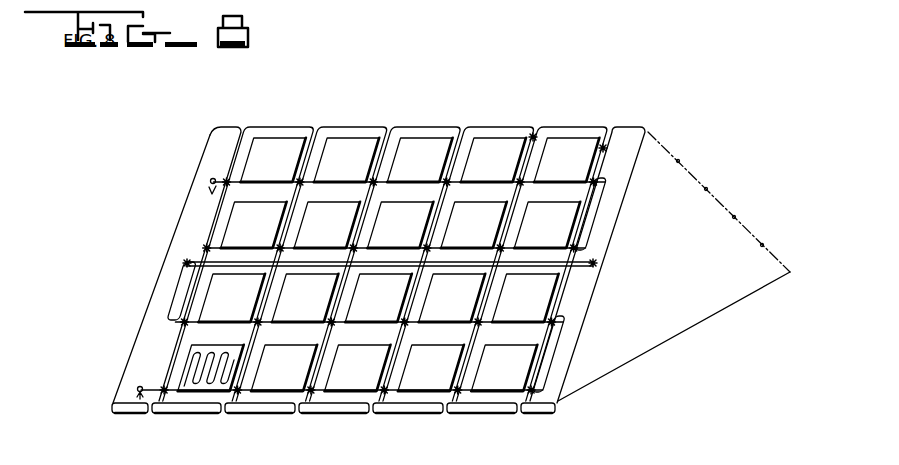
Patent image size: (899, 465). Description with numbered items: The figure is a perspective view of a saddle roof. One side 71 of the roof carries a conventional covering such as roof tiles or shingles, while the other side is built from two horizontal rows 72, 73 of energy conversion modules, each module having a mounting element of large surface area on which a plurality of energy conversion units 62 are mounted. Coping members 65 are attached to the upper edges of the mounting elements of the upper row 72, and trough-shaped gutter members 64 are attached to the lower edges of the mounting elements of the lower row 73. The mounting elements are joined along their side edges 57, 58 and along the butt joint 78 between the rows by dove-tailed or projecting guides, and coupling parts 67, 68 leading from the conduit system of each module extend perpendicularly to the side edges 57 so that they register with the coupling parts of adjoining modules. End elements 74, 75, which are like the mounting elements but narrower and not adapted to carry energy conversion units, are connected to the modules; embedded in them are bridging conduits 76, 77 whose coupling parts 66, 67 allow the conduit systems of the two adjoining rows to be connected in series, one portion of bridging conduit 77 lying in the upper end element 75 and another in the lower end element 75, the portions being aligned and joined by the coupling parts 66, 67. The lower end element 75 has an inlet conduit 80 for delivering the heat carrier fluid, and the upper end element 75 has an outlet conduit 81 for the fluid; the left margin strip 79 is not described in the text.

The side edge 57 is at (563, 101).
The side edge 58 is at (602, 147).
The energy conversion unit 62 is at (335, 150).
The gutter member 64 is at (203, 407).
The coping member 65 is at (380, 127).
The coupling part 66 is at (370, 311).
The coupling part 67 is at (184, 261).
The coupling part 68 is at (457, 393).
The roof side 71 is at (718, 213).
The upper row 72 is at (565, 196).
The lower row 73 is at (197, 338).
The end element 74 is at (573, 294).
The end element 75 is at (155, 320).
The bridging conduit 76 is at (593, 228).
The bridging conduit 77 is at (178, 293).
The butt joint 78 is at (597, 263).
The left margin strip 79 is at (223, 148).
The inlet conduit 80 is at (137, 389).
The outlet conduit 81 is at (210, 181).